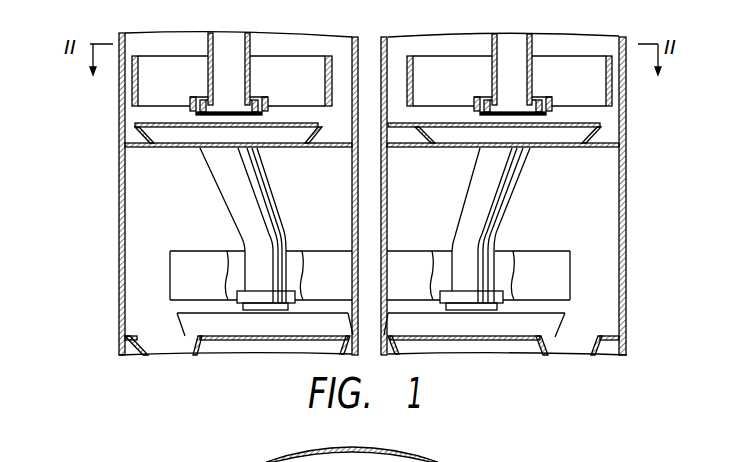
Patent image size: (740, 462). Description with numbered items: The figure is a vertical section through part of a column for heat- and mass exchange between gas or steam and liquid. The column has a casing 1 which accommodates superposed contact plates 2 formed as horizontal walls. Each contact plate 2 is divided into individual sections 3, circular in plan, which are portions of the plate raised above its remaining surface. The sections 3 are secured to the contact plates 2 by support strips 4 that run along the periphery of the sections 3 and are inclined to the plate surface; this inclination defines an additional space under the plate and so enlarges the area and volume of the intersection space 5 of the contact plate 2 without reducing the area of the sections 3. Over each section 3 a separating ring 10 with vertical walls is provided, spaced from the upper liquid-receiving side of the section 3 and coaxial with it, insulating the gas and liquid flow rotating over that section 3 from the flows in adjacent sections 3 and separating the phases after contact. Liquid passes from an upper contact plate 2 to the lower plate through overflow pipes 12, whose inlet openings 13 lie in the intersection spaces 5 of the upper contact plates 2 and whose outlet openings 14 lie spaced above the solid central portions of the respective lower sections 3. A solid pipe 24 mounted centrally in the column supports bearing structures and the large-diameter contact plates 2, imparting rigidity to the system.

The casing 1 is at (113, 250).
The contact plate 2 is at (600, 153).
The section 3 is at (566, 120).
The support strip 4 is at (603, 129).
The intersection space 5 is at (131, 140).
The separating ring 10 is at (132, 88).
The overflow pipe 12 is at (524, 170).
The inlet opening 13 is at (578, 345).
The outlet opening 14 is at (502, 80).
The solid pipe 24 is at (385, 190).